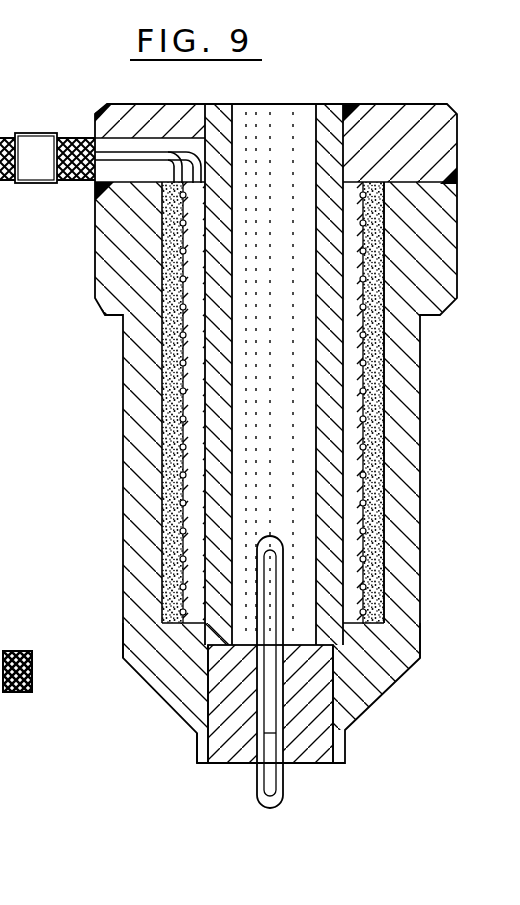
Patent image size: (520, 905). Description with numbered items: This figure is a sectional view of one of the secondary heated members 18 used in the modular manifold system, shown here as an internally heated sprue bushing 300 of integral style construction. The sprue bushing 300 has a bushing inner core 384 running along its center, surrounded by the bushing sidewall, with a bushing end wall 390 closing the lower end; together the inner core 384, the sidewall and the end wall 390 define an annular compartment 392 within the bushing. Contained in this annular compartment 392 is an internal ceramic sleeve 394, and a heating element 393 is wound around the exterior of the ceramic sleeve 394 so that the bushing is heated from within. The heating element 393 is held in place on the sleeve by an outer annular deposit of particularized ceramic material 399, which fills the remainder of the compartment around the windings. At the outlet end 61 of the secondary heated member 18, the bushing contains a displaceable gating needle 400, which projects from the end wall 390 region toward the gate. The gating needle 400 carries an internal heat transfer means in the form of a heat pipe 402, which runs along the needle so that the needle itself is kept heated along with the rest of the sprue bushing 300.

The secondary heated member 18 is at (88, 298).
The outlet end 61 is at (196, 743).
The sprue bushing 300 is at (123, 412).
The bushing inner core 384 is at (323, 128).
The bushing end wall 390 is at (358, 650).
The annular compartment 392 is at (383, 296).
The heating element 393 is at (378, 354).
The ceramic sleeve 394 is at (385, 260).
The particularized ceramic material 399 is at (377, 446).
The gating needle 400 is at (222, 765).
The heat pipe 402 is at (293, 765).